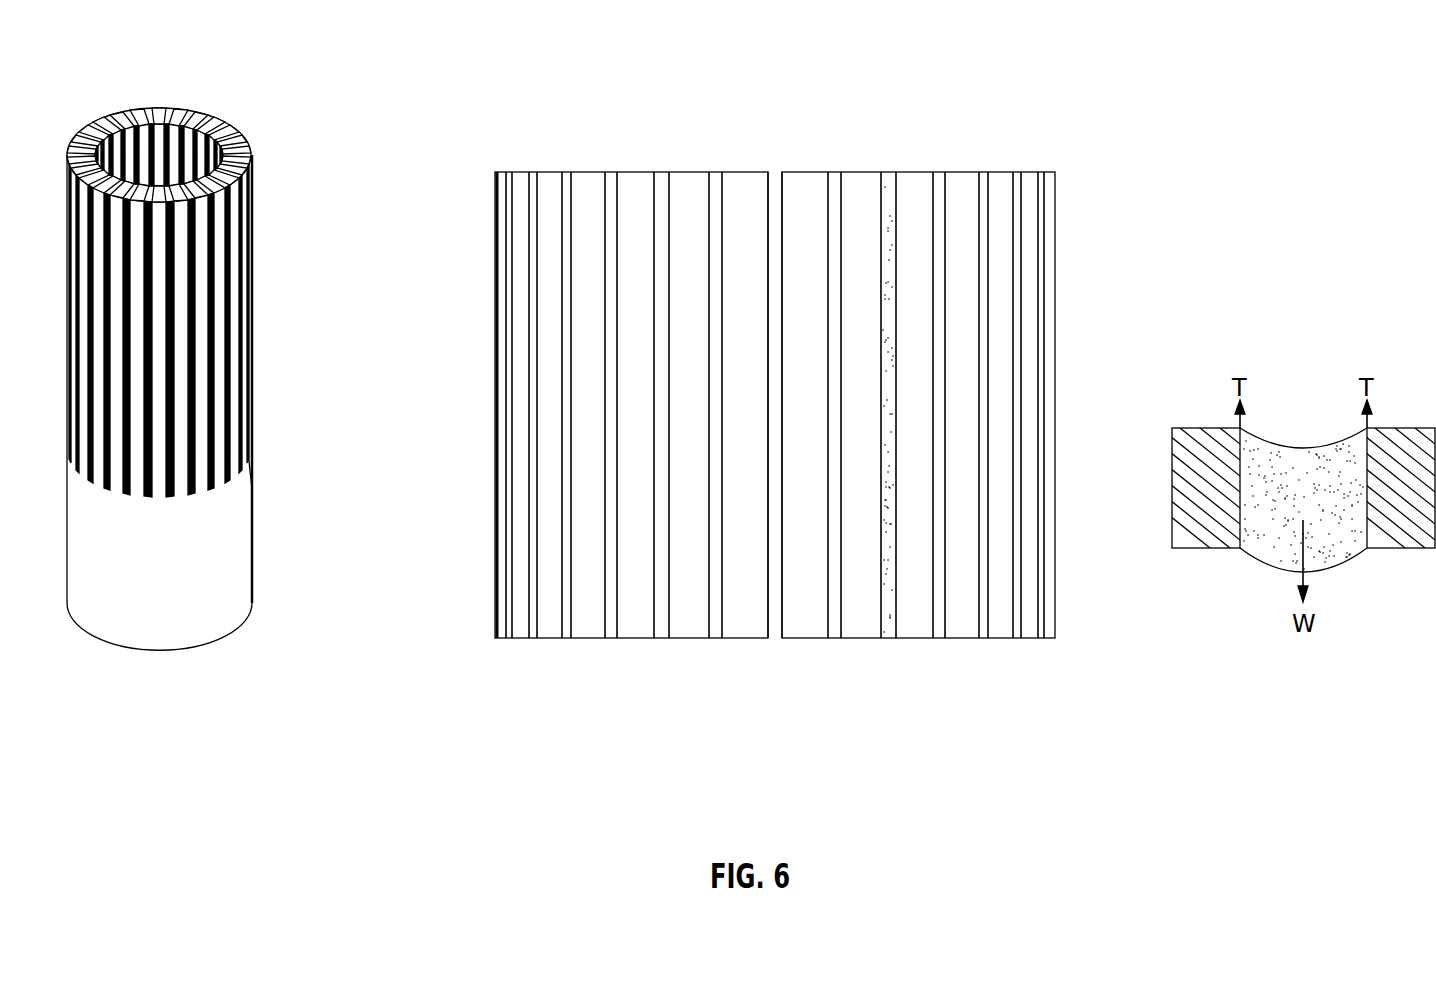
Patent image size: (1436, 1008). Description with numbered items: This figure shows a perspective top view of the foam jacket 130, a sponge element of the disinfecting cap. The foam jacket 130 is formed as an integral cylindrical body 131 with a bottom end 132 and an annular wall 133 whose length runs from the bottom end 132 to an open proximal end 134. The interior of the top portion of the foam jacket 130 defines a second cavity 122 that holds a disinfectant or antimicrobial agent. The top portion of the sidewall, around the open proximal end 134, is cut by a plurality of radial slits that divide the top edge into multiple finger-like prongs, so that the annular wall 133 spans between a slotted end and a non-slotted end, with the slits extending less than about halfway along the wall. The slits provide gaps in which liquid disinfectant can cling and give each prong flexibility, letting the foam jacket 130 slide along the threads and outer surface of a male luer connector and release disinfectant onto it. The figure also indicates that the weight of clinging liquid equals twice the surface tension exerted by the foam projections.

The second cavity 122 is at (141, 150).
The foam jacket 130 is at (211, 372).
The integral cylindrical body 131 is at (236, 533).
The bottom end 132 is at (250, 620).
The annular wall 133 is at (253, 490).
The open proximal end 134 is at (168, 156).